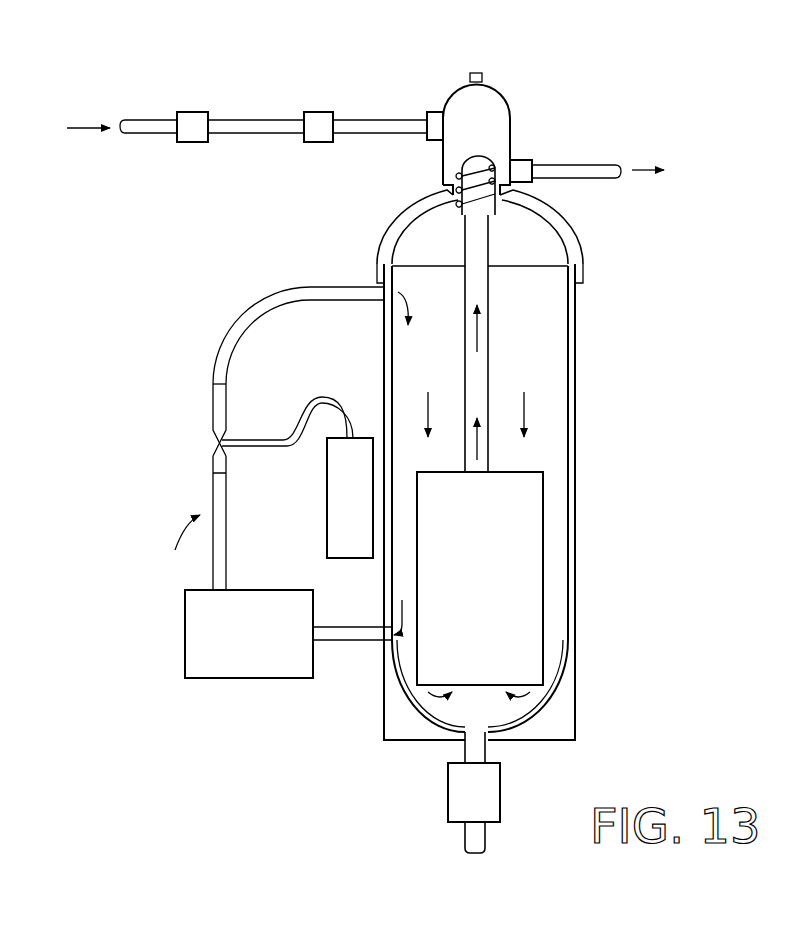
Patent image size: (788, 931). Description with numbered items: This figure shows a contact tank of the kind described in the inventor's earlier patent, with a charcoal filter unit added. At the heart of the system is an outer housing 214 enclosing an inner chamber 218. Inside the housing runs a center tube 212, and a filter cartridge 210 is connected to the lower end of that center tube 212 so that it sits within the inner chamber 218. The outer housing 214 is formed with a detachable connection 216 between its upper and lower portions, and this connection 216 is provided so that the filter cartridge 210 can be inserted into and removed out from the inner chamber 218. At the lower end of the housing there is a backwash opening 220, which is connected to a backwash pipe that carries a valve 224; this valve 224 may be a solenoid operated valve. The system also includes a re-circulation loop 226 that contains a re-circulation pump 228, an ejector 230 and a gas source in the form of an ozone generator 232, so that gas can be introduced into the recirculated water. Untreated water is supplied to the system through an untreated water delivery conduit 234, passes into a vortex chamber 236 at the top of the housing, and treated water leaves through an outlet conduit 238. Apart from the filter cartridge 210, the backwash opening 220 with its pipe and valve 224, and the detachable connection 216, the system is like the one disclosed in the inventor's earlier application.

The filter cartridge 210 is at (535, 550).
The center tube 212 is at (489, 368).
The outer housing 214 is at (577, 318).
The detachable connection 216 is at (585, 266).
The inner chamber 218 is at (552, 416).
The backwash opening 220 is at (486, 742).
The valve 224 is at (455, 790).
The re-circulation loop 226 is at (189, 523).
The re-circulation pump 228 is at (270, 665).
The ejector 230 is at (218, 443).
The ozone generator 232 is at (326, 515).
The untreated water delivery conduit 234 is at (252, 120).
The vortex chamber 236 is at (440, 162).
The outlet conduit 238 is at (589, 162).